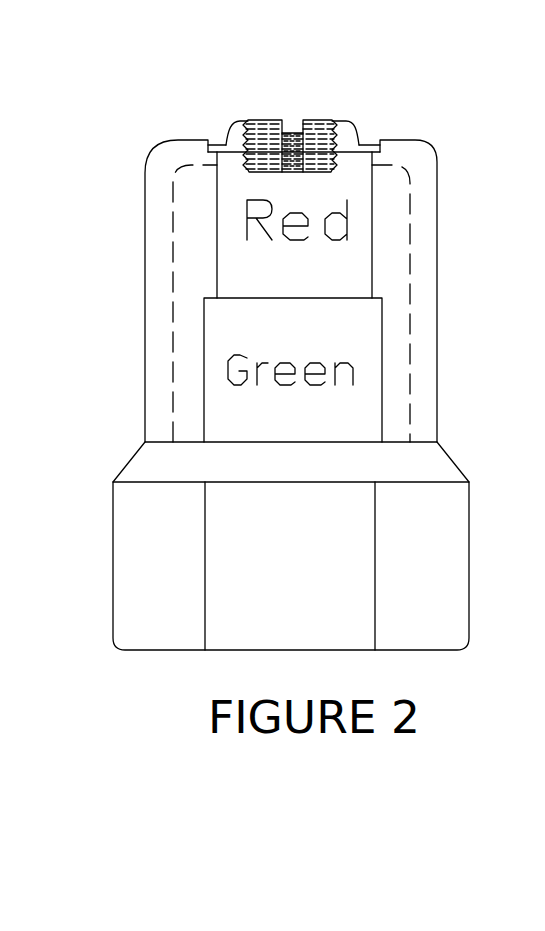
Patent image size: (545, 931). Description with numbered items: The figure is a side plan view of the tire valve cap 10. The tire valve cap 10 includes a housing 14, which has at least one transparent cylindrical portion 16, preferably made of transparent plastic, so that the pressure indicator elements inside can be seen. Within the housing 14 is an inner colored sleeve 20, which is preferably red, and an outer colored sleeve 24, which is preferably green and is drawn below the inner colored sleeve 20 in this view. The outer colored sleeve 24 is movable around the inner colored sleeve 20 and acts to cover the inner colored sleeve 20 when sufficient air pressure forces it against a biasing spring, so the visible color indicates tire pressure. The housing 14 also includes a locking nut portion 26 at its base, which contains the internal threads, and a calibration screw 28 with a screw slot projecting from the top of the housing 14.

The tire valve cap 10 is at (267, 356).
The housing 14 is at (447, 230).
The transparent cylindrical portion 16 is at (435, 342).
The inner colored sleeve 20 is at (313, 284).
The outer colored sleeve 24 is at (313, 427).
The locking nut portion 26 is at (457, 550).
The calibration screw 28 is at (315, 120).